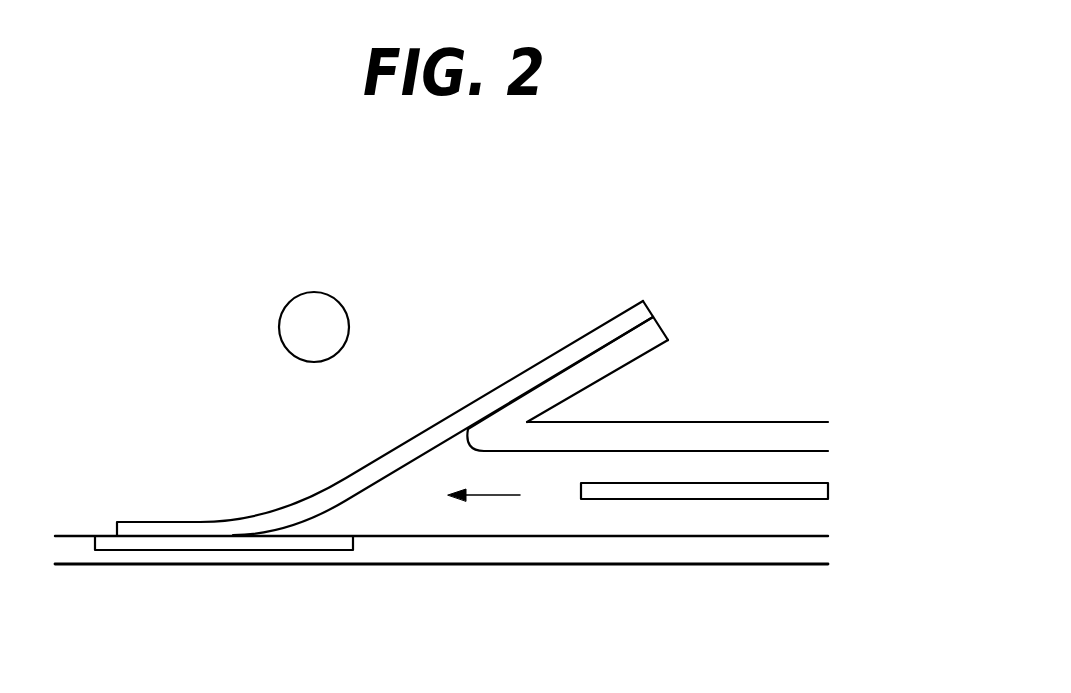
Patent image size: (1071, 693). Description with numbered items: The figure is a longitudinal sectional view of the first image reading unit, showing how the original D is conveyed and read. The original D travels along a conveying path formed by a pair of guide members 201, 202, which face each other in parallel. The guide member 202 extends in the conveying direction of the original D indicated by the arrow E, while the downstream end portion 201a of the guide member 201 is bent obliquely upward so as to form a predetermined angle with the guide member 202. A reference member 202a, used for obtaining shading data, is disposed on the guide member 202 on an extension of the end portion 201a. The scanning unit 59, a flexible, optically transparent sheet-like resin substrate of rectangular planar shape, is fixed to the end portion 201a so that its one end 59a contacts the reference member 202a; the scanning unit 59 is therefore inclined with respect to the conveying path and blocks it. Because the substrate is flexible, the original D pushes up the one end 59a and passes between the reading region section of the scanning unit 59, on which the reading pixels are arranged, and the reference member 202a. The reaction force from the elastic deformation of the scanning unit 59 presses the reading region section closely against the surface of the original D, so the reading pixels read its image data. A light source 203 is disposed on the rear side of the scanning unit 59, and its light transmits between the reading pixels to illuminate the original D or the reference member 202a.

The scanning unit 59 is at (308, 495).
The one end 59a is at (117, 521).
The guide member 201 is at (737, 422).
The end portion 201a is at (612, 357).
The guide member 202 is at (682, 565).
The reference member 202a is at (215, 550).
The light source 203 is at (315, 292).
The original D is at (803, 482).
The arrow E is at (493, 496).